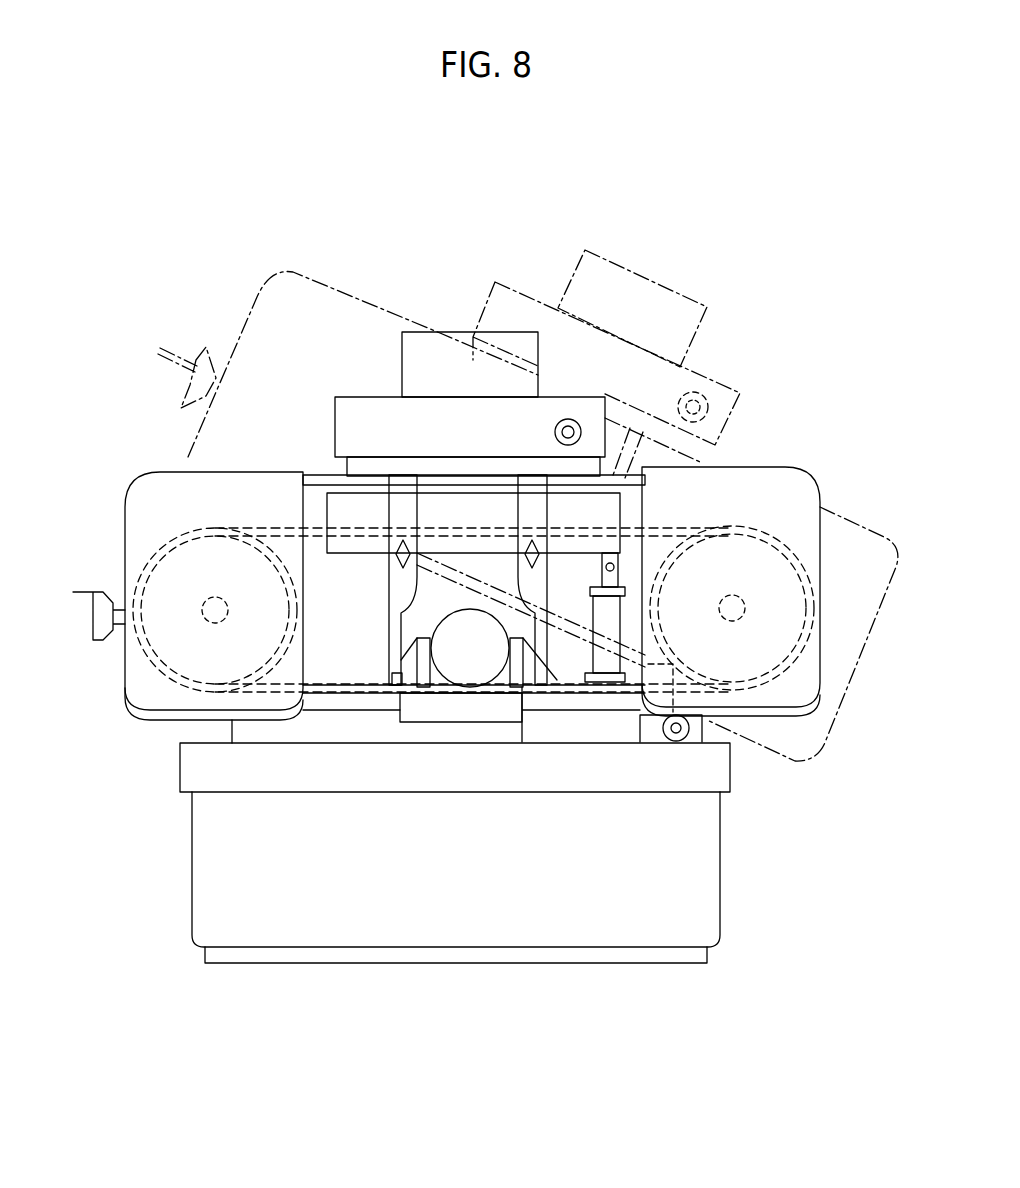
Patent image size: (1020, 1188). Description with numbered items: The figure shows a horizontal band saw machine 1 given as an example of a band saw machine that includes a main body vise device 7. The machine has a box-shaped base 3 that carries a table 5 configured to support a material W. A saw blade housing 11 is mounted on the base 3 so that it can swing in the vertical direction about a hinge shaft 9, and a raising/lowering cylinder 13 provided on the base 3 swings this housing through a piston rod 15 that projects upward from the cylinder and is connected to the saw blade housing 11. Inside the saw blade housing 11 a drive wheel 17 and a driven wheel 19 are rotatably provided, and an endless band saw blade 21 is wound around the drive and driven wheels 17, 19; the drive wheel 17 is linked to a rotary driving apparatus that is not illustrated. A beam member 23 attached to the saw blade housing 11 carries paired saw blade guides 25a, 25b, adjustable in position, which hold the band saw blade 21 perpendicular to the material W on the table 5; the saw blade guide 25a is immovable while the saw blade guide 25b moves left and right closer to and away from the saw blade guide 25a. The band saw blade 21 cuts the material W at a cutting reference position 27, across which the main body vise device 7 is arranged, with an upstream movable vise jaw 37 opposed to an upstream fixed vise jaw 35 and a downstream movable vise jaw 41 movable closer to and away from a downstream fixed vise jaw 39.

The horizontal band saw machine 1 is at (404, 244).
The base 3 is at (712, 886).
The table 5 is at (473, 710).
The main body vise device 7 is at (380, 661).
The hinge shaft 9 is at (667, 742).
The saw blade housing 11 is at (848, 532).
The raising/lowering cylinder 13 is at (610, 617).
The piston rod 15 is at (600, 572).
The drive wheel 17 is at (756, 562).
The driven wheel 19 is at (176, 588).
The band saw blade 21 is at (607, 690).
The beam member 23 is at (468, 490).
The saw blade guide 25a is at (528, 488).
The saw blade guide 25b is at (402, 488).
The cutting reference position 27 is at (671, 667).
The upstream fixed vise jaw 35 is at (516, 680).
The upstream movable vise jaw 37 is at (410, 656).
The downstream fixed vise jaw 39 is at (543, 742).
The downstream movable vise jaw 41 is at (415, 742).
The material W is at (444, 626).